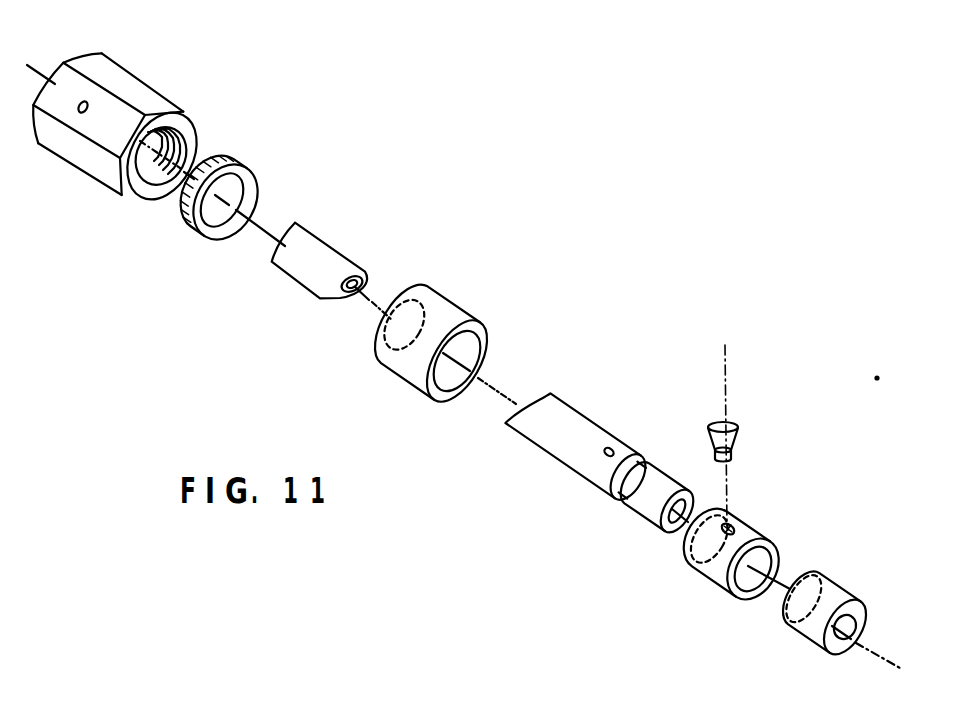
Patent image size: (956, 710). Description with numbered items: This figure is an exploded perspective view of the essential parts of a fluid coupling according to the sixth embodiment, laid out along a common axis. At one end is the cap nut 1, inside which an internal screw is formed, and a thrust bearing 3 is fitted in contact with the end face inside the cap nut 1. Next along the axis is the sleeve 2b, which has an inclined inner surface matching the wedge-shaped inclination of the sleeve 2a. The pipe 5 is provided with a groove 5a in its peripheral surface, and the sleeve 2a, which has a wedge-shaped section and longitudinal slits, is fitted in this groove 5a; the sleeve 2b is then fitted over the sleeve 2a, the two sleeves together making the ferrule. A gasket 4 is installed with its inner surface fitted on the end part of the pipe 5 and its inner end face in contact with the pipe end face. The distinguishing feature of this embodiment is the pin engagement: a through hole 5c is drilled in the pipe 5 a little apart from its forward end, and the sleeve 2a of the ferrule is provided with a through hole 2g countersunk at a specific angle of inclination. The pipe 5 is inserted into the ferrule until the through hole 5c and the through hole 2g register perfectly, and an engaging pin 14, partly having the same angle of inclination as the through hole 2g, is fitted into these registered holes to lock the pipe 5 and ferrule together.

The cap nut 1 is at (145, 85).
The thrust bearing 3 is at (208, 236).
The pipe 5 is at (327, 250).
The through hole 5c is at (614, 450).
The groove 5a is at (647, 467).
The sleeve 2b is at (440, 298).
The engaging pin 14 is at (728, 428).
The sleeve 2a is at (703, 573).
The through hole 2g is at (737, 525).
The gasket 4 is at (820, 570).